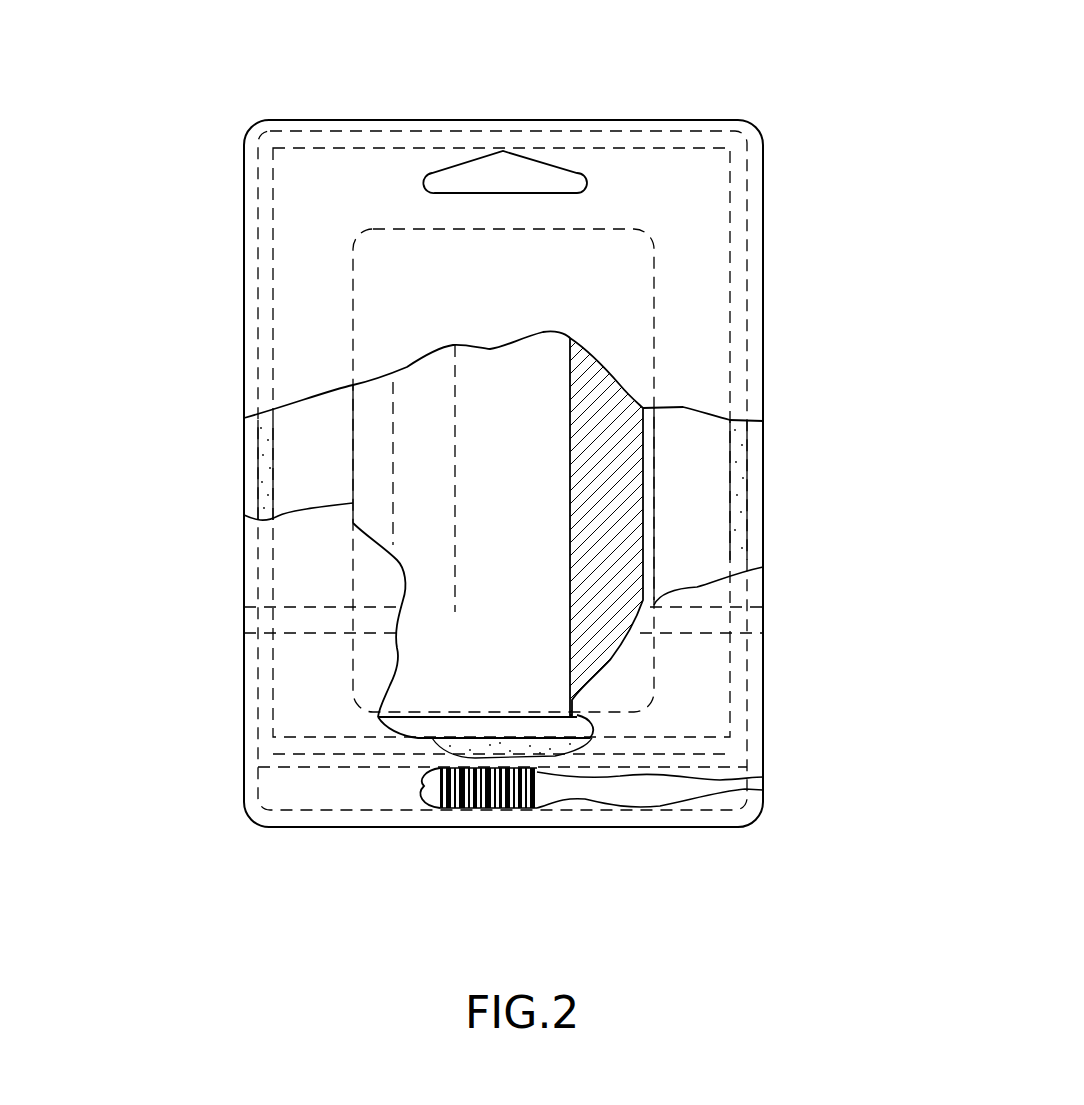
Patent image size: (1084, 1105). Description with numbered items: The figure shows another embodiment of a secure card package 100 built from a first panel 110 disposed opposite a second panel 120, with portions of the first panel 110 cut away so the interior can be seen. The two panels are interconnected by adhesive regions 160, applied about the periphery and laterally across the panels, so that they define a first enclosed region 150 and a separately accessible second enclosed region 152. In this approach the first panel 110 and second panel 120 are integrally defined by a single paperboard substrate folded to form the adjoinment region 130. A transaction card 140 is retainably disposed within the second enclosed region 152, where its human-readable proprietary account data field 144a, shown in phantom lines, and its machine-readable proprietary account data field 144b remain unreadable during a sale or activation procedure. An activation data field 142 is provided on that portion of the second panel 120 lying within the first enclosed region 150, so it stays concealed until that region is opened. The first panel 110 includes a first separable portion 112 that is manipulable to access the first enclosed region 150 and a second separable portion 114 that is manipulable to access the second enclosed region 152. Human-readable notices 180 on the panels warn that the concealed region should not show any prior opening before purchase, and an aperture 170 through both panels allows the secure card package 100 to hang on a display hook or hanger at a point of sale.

The secure card package 100 is at (673, 110).
The first panel 110 is at (287, 318).
The first separable portion 112 is at (317, 770).
The second separable portion 114 is at (290, 634).
The second panel 120 is at (244, 427).
The adjoinment region 130 is at (664, 821).
The transaction card 140 is at (353, 523).
The activation data field 142 is at (448, 808).
The human-readable proprietary account data field 144a is at (455, 410).
The machine-readable proprietary account data field 144b is at (643, 437).
The first enclosed region 150 is at (663, 790).
The second enclosed region 152 is at (300, 480).
The adhesive regions 160 is at (747, 176).
The aperture 170 is at (502, 173).
The human-readable notices 180 is at (293, 268).